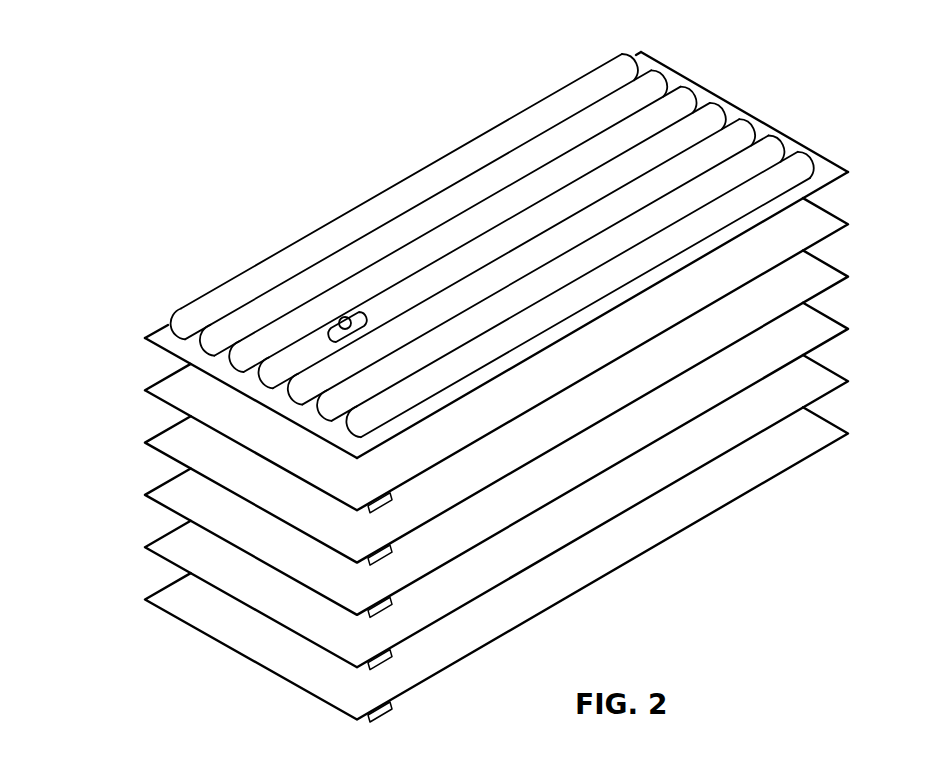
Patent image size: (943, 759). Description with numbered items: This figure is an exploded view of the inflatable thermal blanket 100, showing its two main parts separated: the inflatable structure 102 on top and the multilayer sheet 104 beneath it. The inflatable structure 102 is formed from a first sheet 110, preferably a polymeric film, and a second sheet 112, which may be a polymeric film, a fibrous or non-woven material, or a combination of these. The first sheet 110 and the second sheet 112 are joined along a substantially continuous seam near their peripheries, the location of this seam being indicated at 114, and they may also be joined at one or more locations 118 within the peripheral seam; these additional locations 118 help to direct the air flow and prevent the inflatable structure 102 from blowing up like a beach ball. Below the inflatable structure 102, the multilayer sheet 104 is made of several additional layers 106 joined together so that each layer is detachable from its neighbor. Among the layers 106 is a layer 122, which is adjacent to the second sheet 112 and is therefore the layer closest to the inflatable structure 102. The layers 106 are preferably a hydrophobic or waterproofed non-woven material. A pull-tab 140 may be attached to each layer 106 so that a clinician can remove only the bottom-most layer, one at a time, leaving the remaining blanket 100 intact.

The inflatable thermal blanket 100 is at (327, 183).
The inflatable structure 102 is at (483, 132).
The multilayer sheet 104 is at (85, 338).
The layers 106 is at (162, 432).
The first sheet 110 is at (582, 78).
The second sheet 112 is at (158, 334).
The seam 114 is at (820, 189).
The locations 118 is at (170, 353).
The layer 122 is at (164, 378).
The pull-tab 140 is at (385, 712).